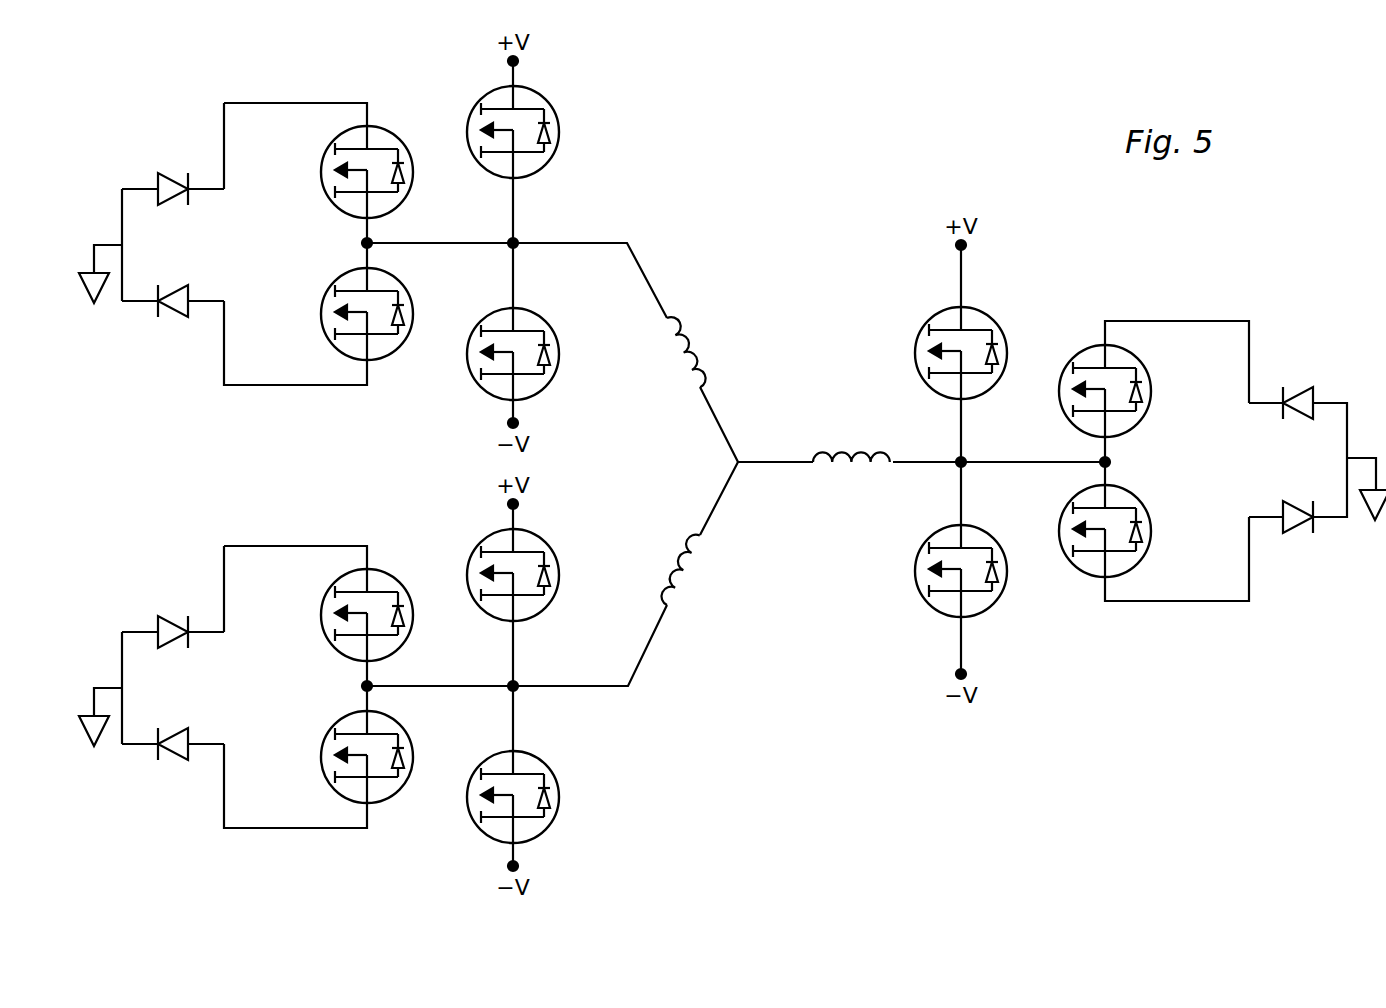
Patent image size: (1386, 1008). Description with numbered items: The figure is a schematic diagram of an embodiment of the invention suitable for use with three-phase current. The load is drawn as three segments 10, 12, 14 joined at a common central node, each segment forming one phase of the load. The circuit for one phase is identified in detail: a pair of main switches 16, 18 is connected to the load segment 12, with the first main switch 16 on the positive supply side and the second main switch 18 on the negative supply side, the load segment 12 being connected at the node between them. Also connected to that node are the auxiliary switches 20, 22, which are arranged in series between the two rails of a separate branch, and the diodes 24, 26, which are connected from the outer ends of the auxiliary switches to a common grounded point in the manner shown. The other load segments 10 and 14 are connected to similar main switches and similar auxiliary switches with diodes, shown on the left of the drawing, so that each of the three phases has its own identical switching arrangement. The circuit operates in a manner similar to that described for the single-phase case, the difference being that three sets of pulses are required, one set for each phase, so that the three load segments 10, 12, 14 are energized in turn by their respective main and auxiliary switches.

The load segment 10 is at (672, 557).
The load segment 12 is at (828, 448).
The load segment 14 is at (704, 359).
The main switch 16 is at (916, 343).
The main switch 18 is at (916, 561).
The auxiliary switch 20 is at (1061, 380).
The auxiliary switch 22 is at (1061, 519).
The diode 24 is at (1289, 399).
The diode 26 is at (1307, 520).